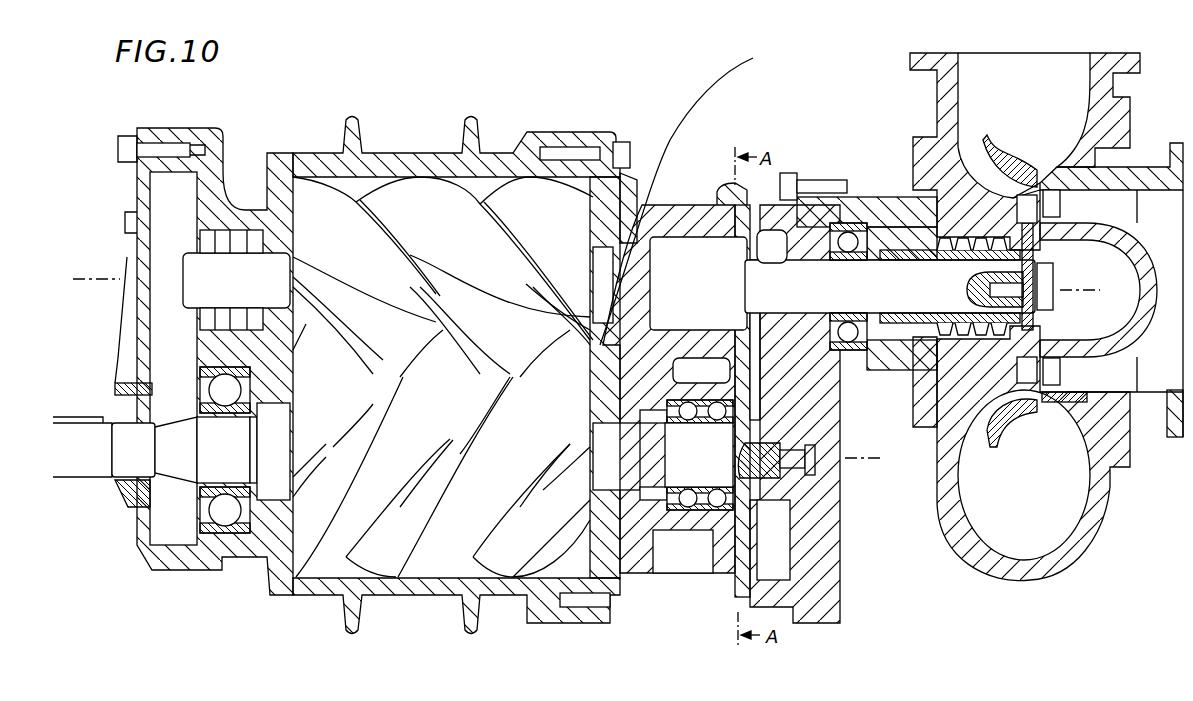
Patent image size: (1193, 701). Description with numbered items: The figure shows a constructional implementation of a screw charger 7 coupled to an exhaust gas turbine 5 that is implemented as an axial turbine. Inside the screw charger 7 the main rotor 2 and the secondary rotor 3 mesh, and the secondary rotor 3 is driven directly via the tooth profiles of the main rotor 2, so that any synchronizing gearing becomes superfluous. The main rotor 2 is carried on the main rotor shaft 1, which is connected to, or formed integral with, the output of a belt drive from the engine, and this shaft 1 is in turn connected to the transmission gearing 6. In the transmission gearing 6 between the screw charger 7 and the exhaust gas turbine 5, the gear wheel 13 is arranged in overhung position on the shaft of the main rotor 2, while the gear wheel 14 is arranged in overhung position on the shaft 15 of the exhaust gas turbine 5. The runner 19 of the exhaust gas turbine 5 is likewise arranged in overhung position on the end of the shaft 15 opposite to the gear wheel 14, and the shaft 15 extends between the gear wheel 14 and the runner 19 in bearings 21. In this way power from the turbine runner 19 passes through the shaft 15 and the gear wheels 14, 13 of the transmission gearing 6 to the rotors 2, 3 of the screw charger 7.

The main rotor shaft 1 is at (60, 464).
The main rotor 2 is at (402, 562).
The secondary rotor 3 is at (424, 192).
The exhaust gas turbine 5 is at (982, 40).
The transmission gearing 6 is at (790, 160).
The screw charger 7 is at (389, 130).
The gear wheel 13 is at (787, 527).
The gear wheel 14 is at (770, 243).
The shaft 15 is at (881, 273).
The runner 19 is at (1030, 203).
The bearings 21 is at (847, 332).